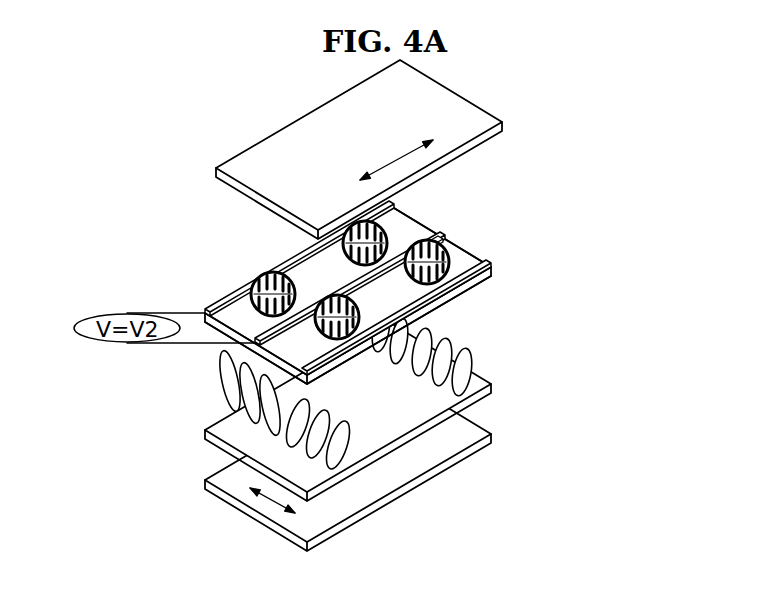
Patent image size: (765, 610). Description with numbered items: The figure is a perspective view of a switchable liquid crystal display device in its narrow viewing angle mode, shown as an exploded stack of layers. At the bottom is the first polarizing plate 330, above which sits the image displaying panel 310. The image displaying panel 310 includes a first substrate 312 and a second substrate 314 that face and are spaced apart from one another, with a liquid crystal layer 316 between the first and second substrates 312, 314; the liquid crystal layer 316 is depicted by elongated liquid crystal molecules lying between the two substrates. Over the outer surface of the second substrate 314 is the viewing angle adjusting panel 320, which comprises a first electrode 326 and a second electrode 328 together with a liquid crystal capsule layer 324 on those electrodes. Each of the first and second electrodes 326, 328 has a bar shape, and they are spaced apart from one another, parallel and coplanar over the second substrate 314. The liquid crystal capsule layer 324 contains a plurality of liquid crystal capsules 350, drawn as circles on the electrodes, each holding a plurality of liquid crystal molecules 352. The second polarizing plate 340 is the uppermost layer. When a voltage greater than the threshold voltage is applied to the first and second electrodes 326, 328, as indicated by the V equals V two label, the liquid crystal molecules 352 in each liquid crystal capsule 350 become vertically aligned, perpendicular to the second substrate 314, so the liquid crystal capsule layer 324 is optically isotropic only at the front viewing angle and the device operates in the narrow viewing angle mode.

The second polarizing plate 340 is at (503, 124).
The viewing angle adjusting panel 320 is at (425, 260).
The first electrode 326 is at (392, 207).
The liquid crystal capsule layer 324 is at (478, 197).
The second electrode 328 is at (433, 236).
The liquid crystal molecule 352 is at (443, 247).
The liquid crystal capsule 350 is at (452, 258).
The image displaying panel 310 is at (439, 388).
The second substrate 314 is at (492, 277).
The liquid crystal layer 316 is at (480, 342).
The first substrate 312 is at (492, 386).
The first polarizing plate 330 is at (491, 437).